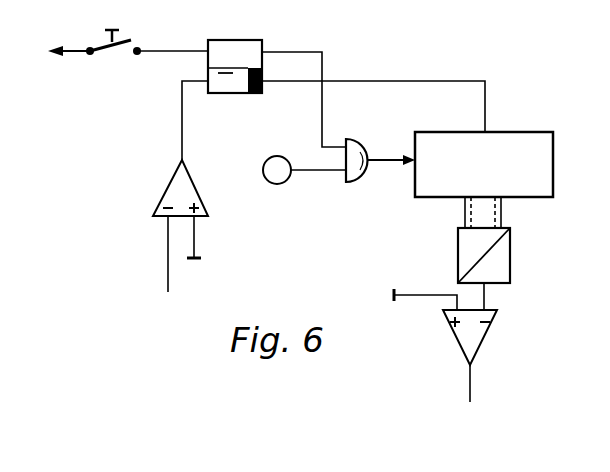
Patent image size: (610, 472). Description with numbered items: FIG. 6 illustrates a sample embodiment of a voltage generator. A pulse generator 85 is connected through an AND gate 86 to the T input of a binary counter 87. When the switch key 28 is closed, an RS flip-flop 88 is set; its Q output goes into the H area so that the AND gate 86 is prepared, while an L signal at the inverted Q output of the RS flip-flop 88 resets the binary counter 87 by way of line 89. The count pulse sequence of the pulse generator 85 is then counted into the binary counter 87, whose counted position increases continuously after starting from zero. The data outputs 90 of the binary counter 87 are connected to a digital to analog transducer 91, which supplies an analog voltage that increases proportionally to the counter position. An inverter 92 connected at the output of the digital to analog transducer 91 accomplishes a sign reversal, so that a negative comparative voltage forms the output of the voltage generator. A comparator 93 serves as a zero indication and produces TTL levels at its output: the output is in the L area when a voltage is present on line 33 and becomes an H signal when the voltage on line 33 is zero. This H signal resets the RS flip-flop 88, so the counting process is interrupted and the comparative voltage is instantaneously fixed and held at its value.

The switch key 28 is at (118, 52).
The RS flip-flop 88 is at (249, 46).
The line 89 is at (358, 83).
The comparator 93 is at (178, 190).
The line 33 is at (168, 262).
The pulse generator 85 is at (268, 157).
The AND gate 86 is at (356, 180).
The binary counter 87 is at (516, 135).
The data outputs 90 is at (480, 210).
The digital to analog transducer 91 is at (510, 250).
The inverter 92 is at (478, 338).